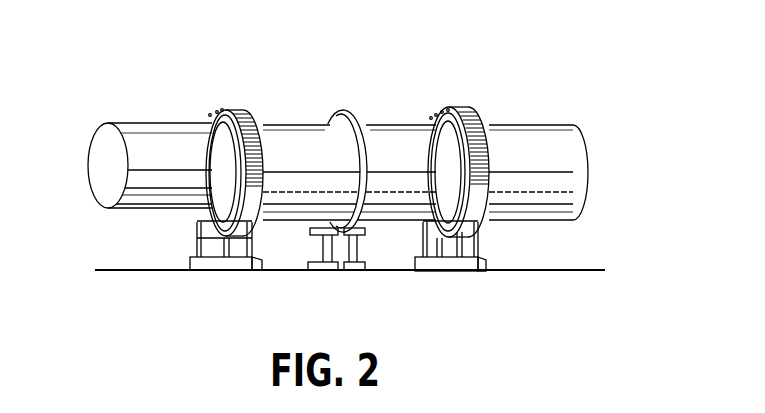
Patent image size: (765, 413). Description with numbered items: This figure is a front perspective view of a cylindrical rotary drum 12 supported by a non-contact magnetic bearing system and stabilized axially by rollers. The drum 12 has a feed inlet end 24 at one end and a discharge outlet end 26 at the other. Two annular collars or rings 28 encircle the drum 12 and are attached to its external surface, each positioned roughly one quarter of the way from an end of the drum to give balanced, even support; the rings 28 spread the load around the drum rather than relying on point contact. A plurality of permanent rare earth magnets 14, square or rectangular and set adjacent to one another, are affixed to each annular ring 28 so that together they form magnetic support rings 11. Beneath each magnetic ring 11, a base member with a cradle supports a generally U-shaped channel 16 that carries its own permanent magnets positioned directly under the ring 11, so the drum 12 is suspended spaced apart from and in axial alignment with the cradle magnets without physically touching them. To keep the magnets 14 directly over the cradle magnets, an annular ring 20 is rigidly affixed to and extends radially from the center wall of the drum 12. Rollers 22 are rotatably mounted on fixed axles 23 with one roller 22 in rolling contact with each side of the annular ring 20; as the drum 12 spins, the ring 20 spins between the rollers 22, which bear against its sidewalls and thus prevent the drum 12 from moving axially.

The magnetic support ring 11 is at (336, 128).
The cylindrical rotary drum 12 is at (542, 130).
The permanent rare earth magnets 14 is at (262, 122).
The U-shaped channel 16 is at (200, 245).
The annular ring 20 is at (343, 112).
The rollers 22 is at (307, 233).
The fixed axles 23 is at (353, 250).
The feed inlet end 24 is at (102, 152).
The discharge outlet end 26 is at (587, 165).
The annular collars or rings 28 is at (206, 118).